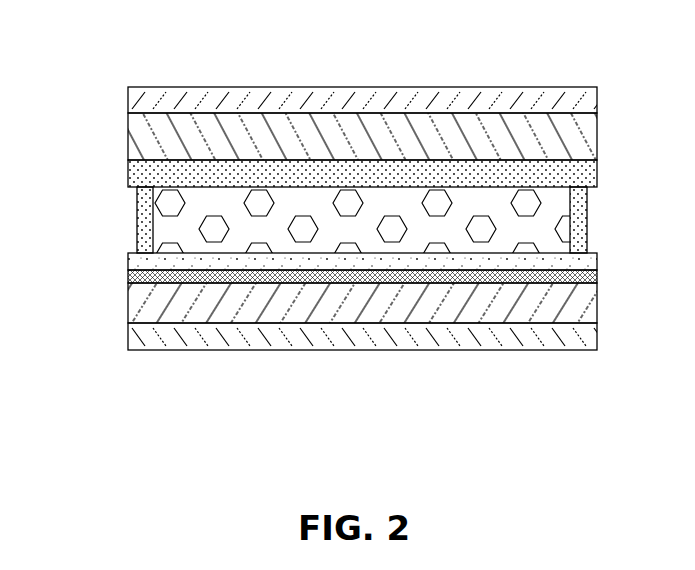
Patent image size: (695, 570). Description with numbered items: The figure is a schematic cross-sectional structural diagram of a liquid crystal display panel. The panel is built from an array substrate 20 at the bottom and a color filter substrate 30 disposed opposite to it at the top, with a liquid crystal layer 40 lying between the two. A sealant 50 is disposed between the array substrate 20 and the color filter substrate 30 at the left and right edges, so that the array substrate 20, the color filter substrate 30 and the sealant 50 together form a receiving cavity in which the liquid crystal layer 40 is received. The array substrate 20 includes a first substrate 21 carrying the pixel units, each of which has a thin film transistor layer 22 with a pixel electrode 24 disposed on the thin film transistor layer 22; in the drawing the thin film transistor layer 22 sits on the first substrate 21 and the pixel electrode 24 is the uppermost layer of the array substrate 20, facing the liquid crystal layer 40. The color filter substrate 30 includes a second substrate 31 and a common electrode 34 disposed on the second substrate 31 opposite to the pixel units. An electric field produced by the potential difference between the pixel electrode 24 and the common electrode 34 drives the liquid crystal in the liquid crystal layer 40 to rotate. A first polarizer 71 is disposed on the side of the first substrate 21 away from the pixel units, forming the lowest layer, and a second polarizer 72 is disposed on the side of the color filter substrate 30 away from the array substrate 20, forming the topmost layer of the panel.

The array substrate 20 is at (340, 330).
The first substrate 21 is at (578, 320).
The thin film transistor layer 22 is at (470, 268).
The pixel electrode 24 is at (577, 255).
The color filter substrate 30 is at (339, 135).
The second substrate 31 is at (578, 139).
The common electrode 34 is at (575, 172).
The liquid crystal layer 40 is at (445, 205).
The sealant 50 is at (578, 220).
The first polarizer 71 is at (577, 340).
The second polarizer 72 is at (578, 106).